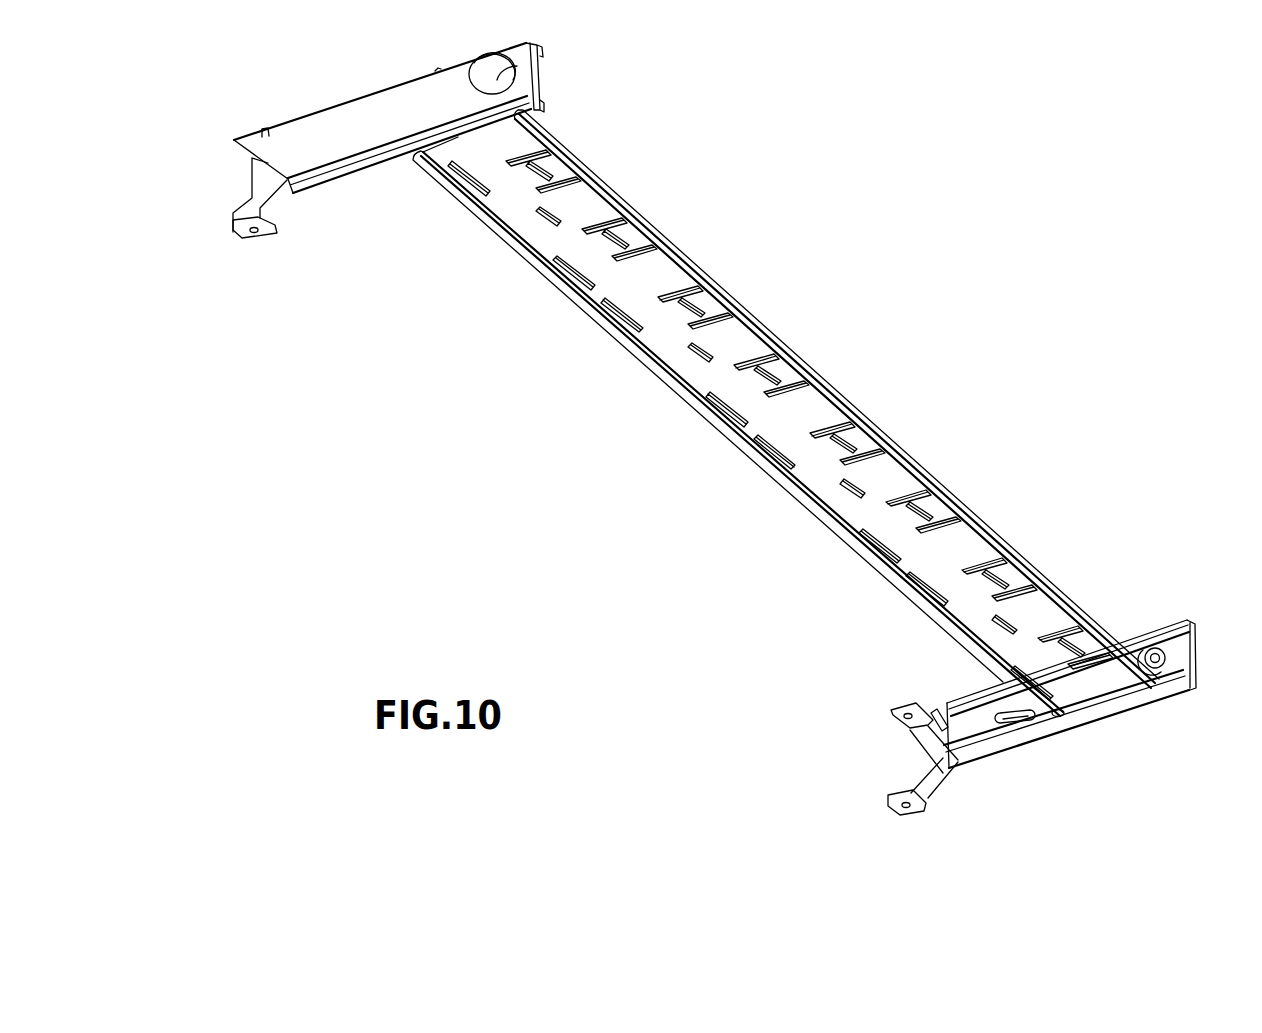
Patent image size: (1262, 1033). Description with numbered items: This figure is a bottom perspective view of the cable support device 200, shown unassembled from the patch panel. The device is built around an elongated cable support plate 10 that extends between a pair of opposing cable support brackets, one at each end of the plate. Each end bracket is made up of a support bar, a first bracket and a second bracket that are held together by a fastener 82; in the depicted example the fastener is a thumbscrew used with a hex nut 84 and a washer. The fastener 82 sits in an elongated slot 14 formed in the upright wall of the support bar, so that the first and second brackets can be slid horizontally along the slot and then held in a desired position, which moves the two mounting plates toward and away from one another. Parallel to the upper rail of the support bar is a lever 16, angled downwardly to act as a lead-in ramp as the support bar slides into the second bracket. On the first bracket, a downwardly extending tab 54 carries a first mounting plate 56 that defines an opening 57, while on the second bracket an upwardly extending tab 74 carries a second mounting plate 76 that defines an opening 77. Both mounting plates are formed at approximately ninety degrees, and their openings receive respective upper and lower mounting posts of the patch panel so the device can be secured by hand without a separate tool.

The cable support plate 10 is at (748, 334).
The elongated slot 14 is at (1011, 722).
The lever 16 is at (951, 719).
The downwardly extending tab 54 is at (250, 191).
The first mounting plate 56 is at (266, 233).
The opening 57 is at (250, 233).
The upwardly extending tab 74 is at (918, 738).
The second mounting plate 76 is at (896, 715).
The opening 77 is at (905, 720).
The fastener 82 is at (494, 72).
The hex nut 84 is at (1167, 657).
The cable support device 200 is at (1012, 263).